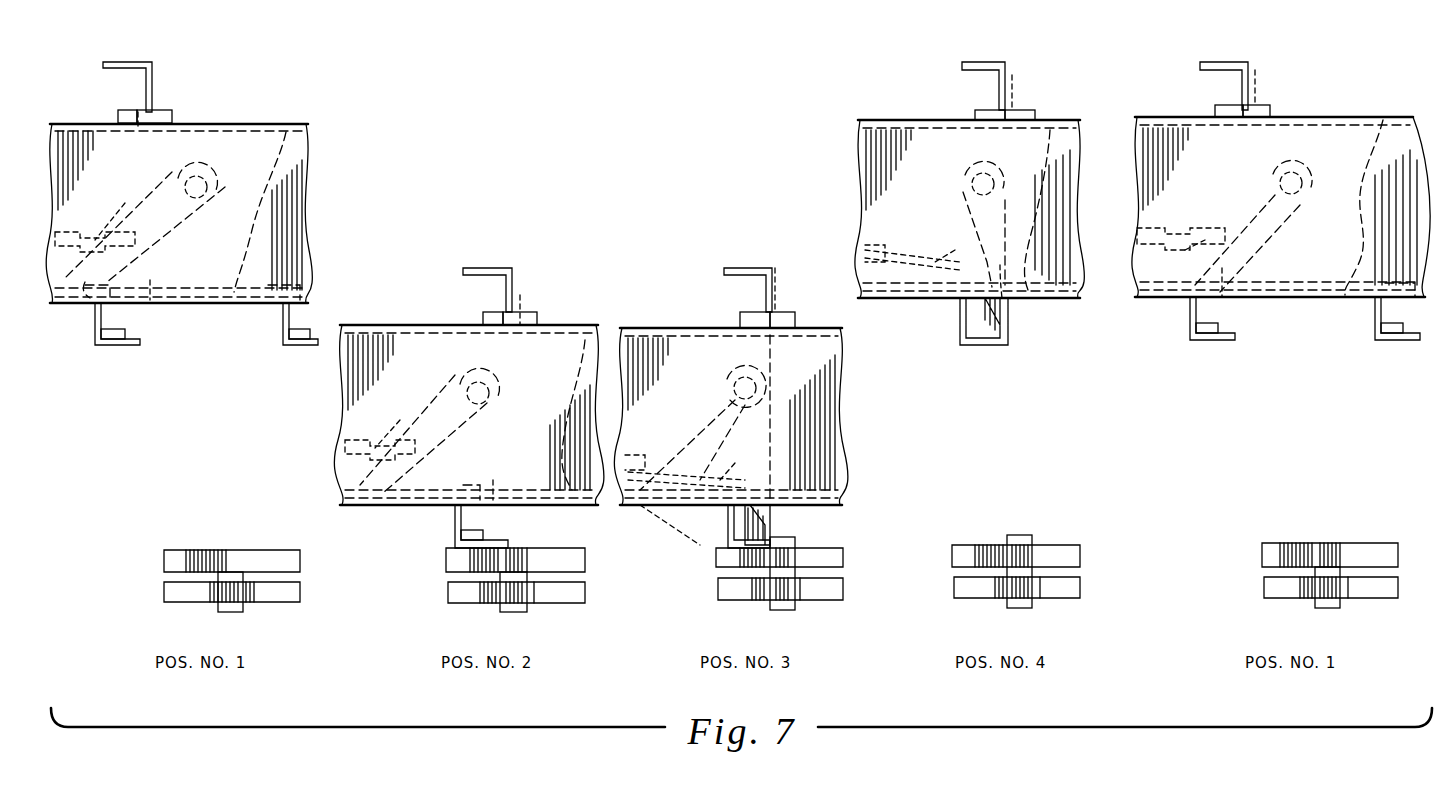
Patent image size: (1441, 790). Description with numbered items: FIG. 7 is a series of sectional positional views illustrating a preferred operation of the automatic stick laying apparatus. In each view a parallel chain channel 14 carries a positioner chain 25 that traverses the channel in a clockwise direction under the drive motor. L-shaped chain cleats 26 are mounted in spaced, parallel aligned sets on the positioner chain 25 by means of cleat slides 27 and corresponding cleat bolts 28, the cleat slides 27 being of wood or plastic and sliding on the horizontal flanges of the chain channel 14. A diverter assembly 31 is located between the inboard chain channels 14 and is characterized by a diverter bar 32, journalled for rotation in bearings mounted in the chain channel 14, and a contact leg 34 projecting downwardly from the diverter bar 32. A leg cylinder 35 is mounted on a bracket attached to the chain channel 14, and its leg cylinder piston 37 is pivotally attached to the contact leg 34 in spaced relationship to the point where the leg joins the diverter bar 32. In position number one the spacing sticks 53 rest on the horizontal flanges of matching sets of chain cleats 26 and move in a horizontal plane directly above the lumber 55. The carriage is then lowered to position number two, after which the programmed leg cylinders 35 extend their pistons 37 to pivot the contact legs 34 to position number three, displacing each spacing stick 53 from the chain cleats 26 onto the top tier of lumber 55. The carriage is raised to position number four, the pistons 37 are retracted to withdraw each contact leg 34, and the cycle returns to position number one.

The chain channel 14 is at (738, 311).
The positioner chain 25 is at (796, 310).
The chain cleat 26 is at (757, 289).
The cleat slide 27 is at (736, 291).
The cleat bolt 28 is at (708, 291).
The diverter assembly 31 is at (681, 316).
The diverter bar 32 is at (757, 273).
The contact leg 34 is at (732, 359).
The leg cylinder 35 is at (640, 338).
The leg cylinder piston 37 is at (650, 332).
The spacing stick 53 is at (757, 352).
The lumber 55 is at (781, 574).